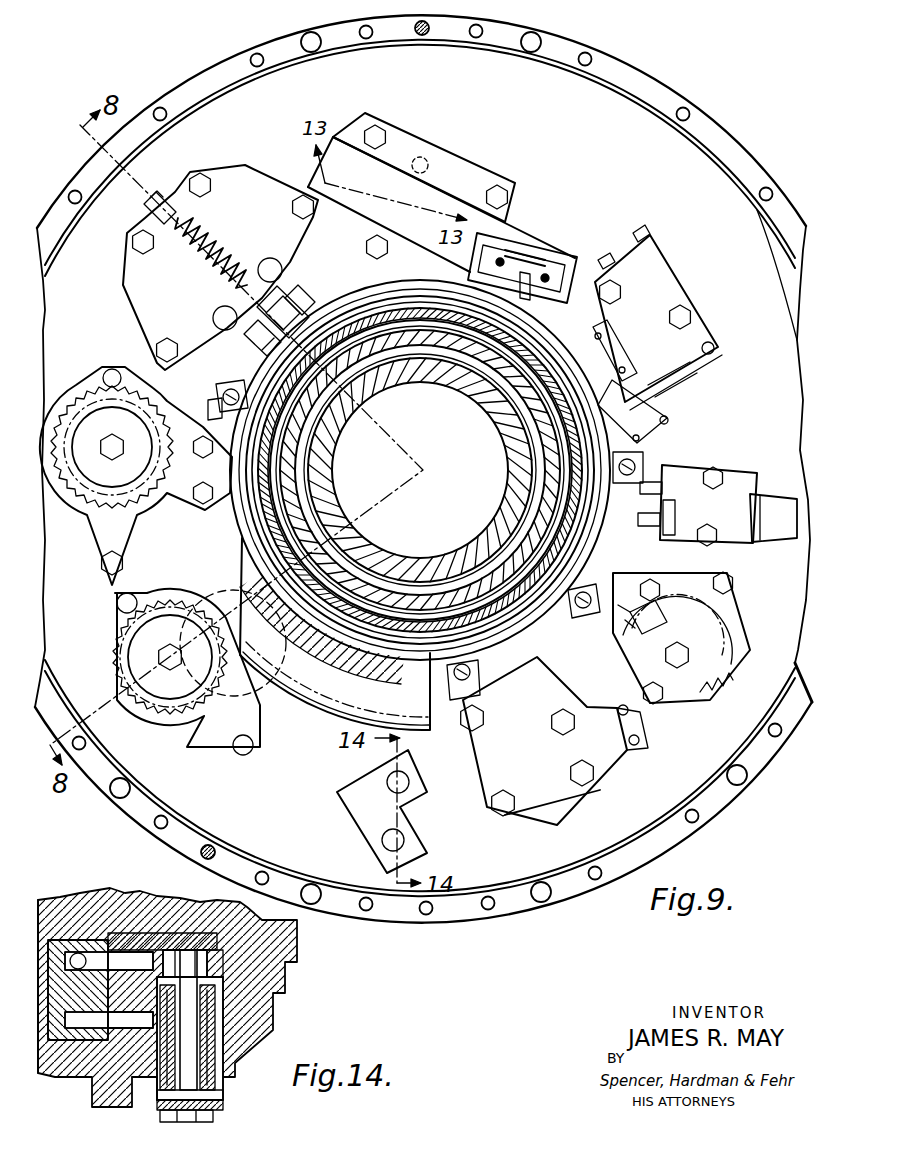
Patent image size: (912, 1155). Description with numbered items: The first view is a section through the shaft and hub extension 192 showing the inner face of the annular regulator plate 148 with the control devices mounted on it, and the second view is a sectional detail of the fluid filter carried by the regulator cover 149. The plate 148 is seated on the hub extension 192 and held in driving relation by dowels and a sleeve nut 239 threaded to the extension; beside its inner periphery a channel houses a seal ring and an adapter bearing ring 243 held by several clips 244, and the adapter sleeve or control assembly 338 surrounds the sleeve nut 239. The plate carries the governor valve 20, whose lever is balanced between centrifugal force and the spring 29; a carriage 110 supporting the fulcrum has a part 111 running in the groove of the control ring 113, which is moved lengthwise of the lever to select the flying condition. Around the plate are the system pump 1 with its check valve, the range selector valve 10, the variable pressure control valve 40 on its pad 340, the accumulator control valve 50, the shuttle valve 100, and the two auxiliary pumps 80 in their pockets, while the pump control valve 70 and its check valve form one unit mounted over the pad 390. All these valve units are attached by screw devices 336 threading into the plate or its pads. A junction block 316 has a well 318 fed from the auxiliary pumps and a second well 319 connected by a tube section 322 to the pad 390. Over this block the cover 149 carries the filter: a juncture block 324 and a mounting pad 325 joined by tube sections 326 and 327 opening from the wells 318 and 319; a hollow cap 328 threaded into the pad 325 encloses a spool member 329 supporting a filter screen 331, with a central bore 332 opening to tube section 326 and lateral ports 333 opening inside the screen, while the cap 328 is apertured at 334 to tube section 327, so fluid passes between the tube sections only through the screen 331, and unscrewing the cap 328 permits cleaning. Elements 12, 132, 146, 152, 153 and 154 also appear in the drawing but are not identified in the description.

In FIG. 9, the system pump 1 is at (735, 603).
In FIG. 9, the range selector valve 10 is at (545, 221).
In FIG. 9, the pawl 12 is at (598, 577).
In FIG. 9, the governor valve 20 is at (268, 176).
In FIG. 9, the spring 29 is at (226, 254).
In FIG. 9, the variable pressure control valve 40 is at (727, 479).
In FIG. 9, the accumulator control valve 50 is at (717, 291).
In FIG. 9, the pump control valve 70 is at (581, 684).
In FIG. 9, the auxiliary pumps 80 is at (80, 530).
In FIG. 9, the shuttle valve 100 is at (430, 163).
In FIG. 9, the carriage 110 is at (291, 300).
In FIG. 9, the part of carriage 111 is at (307, 312).
In FIG. 9, the control ring 113 is at (262, 366).
In FIG. 9, the shaft bore 132 is at (385, 553).
In FIG. 9, the housing flange 146 is at (652, 86).
In FIG. 9, the regulator plate 148 is at (277, 95).
In FIG. 14, the regulator plate 148 is at (50, 903).
In FIG. 14, the regulator cover 149 is at (293, 953).
In FIG. 9, the gear 152 is at (92, 395).
In FIG. 9, the arcuate segment 153 is at (309, 708).
In FIG. 9, the segment lining 154 is at (350, 638).
In FIG. 9, the hub extension 192 is at (545, 445).
In FIG. 9, the sleeve nut 239 is at (271, 470).
In FIG. 9, the adapter bearing ring 243 is at (210, 410).
In FIG. 9, the clips 244 is at (220, 392).
In FIG. 9, the junction block 316 is at (350, 790).
In FIG. 14, the junction block 316 is at (67, 1033).
In FIG. 9, the well 318 is at (405, 843).
In FIG. 14, the well 318 is at (102, 1027).
In FIG. 9, the second well 319 is at (408, 782).
In FIG. 14, the second well 319 is at (98, 958).
In FIG. 14, the tube section 322 is at (79, 953).
In FIG. 14, the juncture block 324 is at (118, 935).
In FIG. 14, the mounting pad 325 is at (217, 948).
In FIG. 14, the tube section 326 is at (150, 935).
In FIG. 14, the tube section 327 is at (130, 1027).
In FIG. 14, the hollow cap 328 is at (223, 1103).
In FIG. 14, the spool member 329 is at (283, 976).
In FIG. 14, the filter screen 331 is at (230, 1078).
In FIG. 14, the central bore 332 is at (186, 985).
In FIG. 14, the lateral ports 333 is at (215, 1013).
In FIG. 14, the apertures 334 is at (215, 1033).
In FIG. 9, the screw devices 336 is at (379, 131).
In FIG. 9, the adapter sleeve 338 is at (267, 533).
In FIG. 9, the pad 340 is at (777, 495).
In FIG. 9, the pad 390 is at (610, 793).